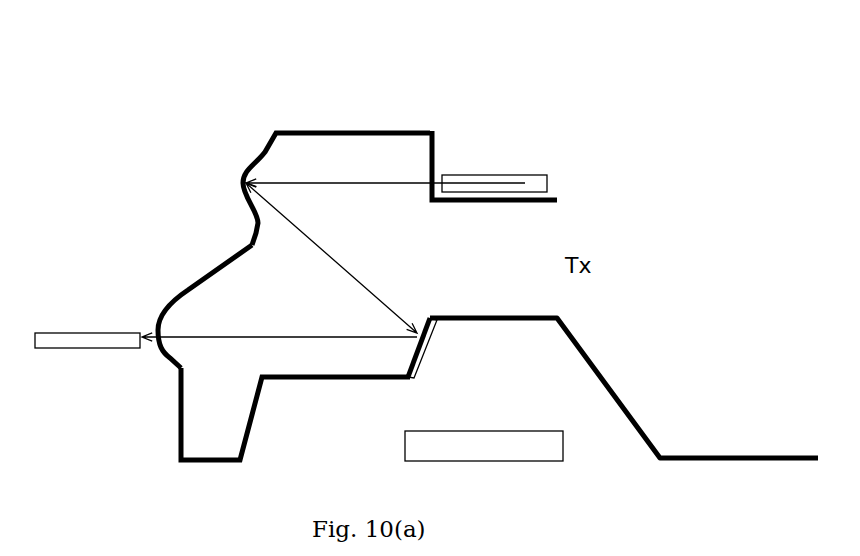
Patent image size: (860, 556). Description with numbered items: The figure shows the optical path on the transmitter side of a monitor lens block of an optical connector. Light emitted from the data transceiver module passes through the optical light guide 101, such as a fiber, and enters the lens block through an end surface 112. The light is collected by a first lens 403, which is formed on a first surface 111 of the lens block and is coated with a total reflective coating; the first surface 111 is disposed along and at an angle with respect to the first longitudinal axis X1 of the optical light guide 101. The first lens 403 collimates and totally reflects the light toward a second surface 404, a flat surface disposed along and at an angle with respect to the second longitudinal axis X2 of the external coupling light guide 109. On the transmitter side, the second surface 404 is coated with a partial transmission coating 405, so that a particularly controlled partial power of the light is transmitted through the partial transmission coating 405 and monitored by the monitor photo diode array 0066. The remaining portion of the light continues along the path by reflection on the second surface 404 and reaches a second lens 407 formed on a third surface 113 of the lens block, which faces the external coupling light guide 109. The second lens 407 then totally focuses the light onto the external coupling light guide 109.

The first lens 403 is at (265, 152).
The first surface 111 is at (253, 237).
The second lens 407 is at (168, 310).
The third surface 113 is at (178, 388).
The end surface 112 is at (436, 145).
The optical light guide 101 is at (525, 182).
The first longitudinal axis X1 is at (500, 185).
The external coupling light guide 109 is at (87, 332).
The second longitudinal axis X2 is at (153, 337).
The second surface 404 is at (427, 315).
The partial transmission coating 405 is at (435, 332).
The monitor photo diode array 0066 is at (432, 340).